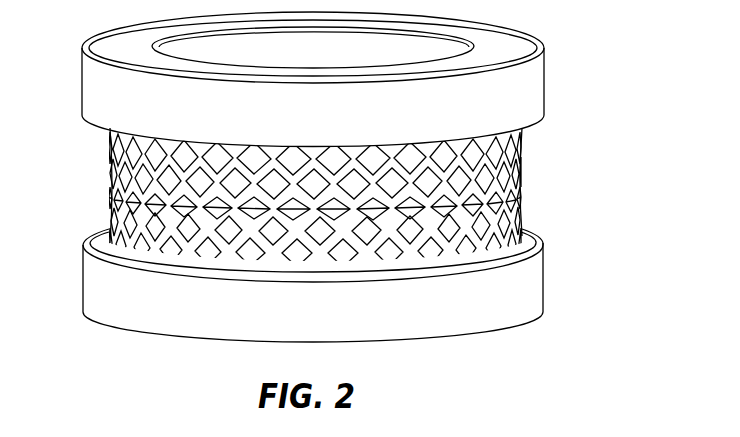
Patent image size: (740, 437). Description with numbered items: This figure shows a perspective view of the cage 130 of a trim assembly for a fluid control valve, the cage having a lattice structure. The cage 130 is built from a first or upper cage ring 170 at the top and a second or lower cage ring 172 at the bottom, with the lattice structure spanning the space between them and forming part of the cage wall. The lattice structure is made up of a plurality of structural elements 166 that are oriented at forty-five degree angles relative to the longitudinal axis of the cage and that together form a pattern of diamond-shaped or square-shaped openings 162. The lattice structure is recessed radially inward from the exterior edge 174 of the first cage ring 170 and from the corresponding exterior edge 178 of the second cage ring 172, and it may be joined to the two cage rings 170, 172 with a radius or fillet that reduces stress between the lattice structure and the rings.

The filter element 130 is at (351, 177).
The first cage ring 170 is at (538, 75).
The exterior edge of the first cage ring 174 is at (545, 98).
The openings 162 is at (282, 197).
The structural elements 166 is at (287, 258).
The second cage ring 172 is at (533, 272).
The side wall of second end cap 178 is at (547, 285).